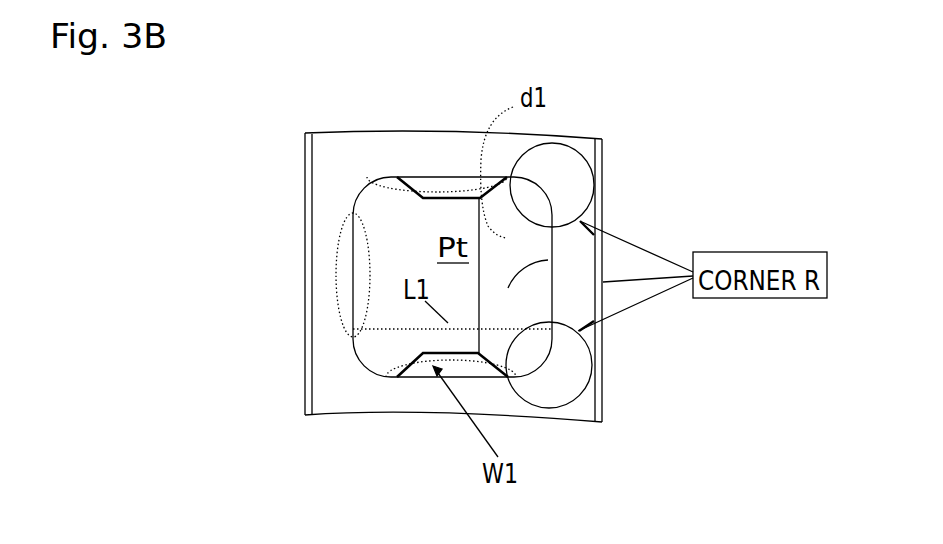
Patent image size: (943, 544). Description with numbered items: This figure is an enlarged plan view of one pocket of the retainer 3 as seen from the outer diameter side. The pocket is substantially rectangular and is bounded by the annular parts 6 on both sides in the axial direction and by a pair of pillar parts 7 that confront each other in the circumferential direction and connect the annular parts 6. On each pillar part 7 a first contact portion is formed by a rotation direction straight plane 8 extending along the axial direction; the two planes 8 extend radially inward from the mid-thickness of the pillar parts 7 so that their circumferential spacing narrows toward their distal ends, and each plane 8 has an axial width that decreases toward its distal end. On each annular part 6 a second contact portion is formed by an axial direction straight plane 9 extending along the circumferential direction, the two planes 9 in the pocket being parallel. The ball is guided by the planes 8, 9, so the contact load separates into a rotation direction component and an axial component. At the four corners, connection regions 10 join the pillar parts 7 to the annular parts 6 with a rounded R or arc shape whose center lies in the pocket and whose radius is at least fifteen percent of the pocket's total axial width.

The retainer 3 is at (640, 171).
The annular part 6 is at (322, 370).
The pillar part 7 is at (425, 153).
The rotation direction straight plane 8 is at (388, 483).
The axial direction straight plane 9 is at (350, 285).
The connection region 10 is at (535, 197).